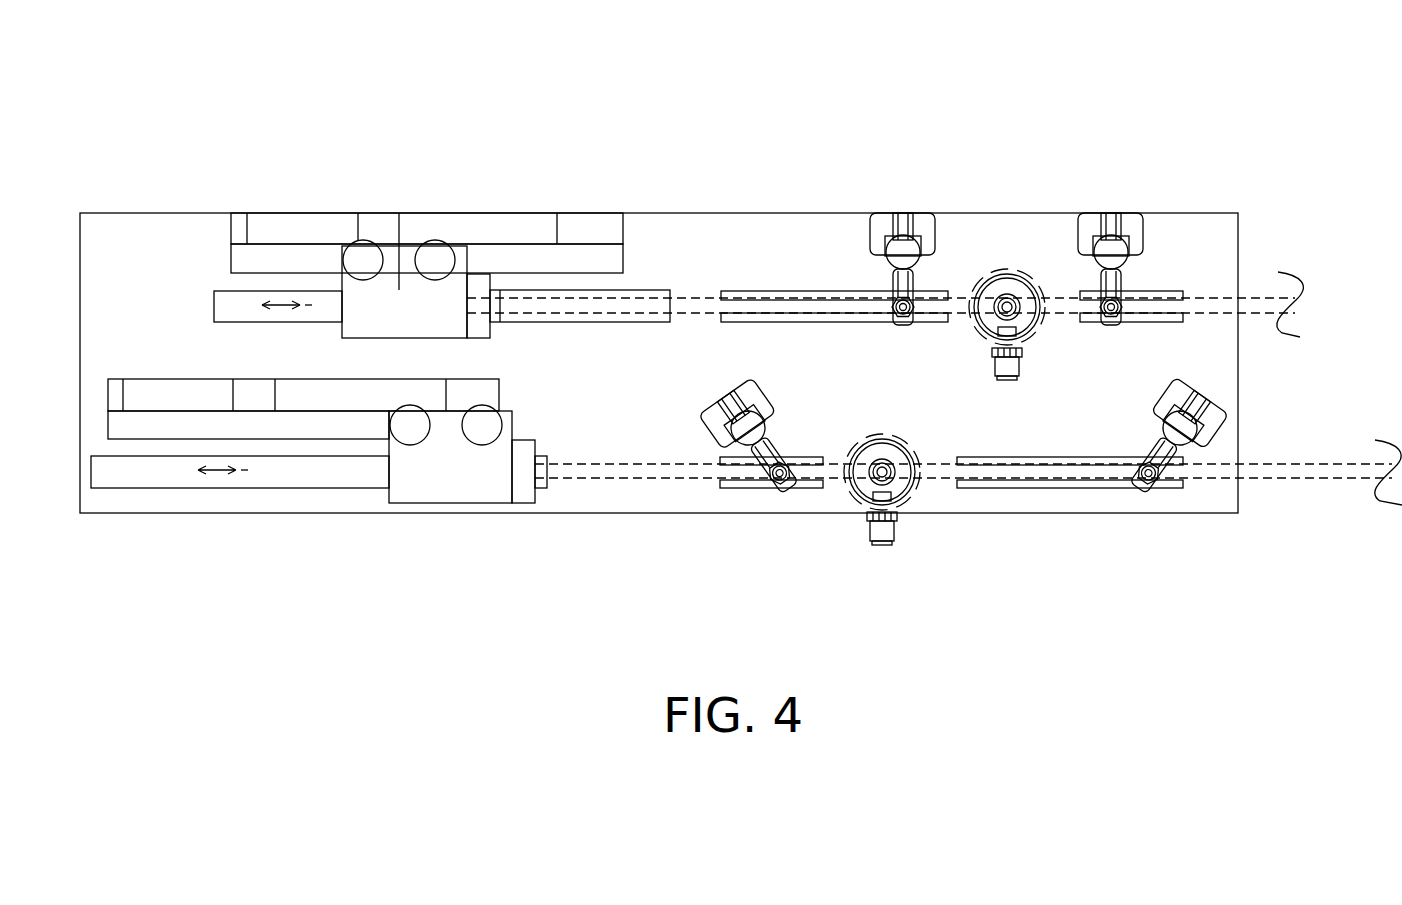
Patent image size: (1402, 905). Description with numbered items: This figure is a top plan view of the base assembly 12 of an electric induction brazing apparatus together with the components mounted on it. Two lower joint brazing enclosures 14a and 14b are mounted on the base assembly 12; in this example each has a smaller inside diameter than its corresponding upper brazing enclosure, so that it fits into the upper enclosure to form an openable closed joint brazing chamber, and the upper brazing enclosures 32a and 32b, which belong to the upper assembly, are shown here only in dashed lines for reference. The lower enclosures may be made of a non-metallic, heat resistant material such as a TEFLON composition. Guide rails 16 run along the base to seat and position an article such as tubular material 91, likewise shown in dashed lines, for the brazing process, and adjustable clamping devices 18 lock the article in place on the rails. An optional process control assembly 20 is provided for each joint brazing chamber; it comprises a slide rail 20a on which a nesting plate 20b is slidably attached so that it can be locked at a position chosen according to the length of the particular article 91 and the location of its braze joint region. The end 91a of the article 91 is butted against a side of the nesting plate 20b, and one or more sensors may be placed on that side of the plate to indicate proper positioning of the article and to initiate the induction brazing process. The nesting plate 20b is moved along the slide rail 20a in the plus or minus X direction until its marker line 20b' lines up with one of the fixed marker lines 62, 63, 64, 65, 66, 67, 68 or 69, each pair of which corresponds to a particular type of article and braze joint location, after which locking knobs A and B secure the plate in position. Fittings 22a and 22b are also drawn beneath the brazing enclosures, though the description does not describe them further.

The base assembly 12 is at (926, 61).
The lower joint brazing enclosure 14a is at (1012, 275).
The lower joint brazing enclosure 14b is at (860, 496).
The guide rails 16 is at (787, 296).
The adjustable clamping devices 18 is at (905, 253).
The process control assembly 20 is at (623, 192).
The slide rail 20a is at (235, 303).
The nesting plate 20b is at (438, 394).
The marker line 20b' is at (439, 392).
The first connector 22a is at (1012, 368).
The second connector 22b is at (888, 536).
The upper brazing enclosure 32a is at (1029, 274).
The upper brazing enclosure 32b is at (925, 500).
The fixed marker line 62 is at (247, 211).
The fixed marker line 63 is at (123, 377).
The fixed marker line 64 is at (358, 211).
The fixed marker line 65 is at (233, 377).
The fixed marker line 66 is at (399, 211).
The fixed marker line 67 is at (275, 377).
The fixed marker line 68 is at (557, 211).
The fixed marker line 69 is at (446, 377).
The tubular material 91 is at (1258, 307).
The end of article 91a is at (468, 322).